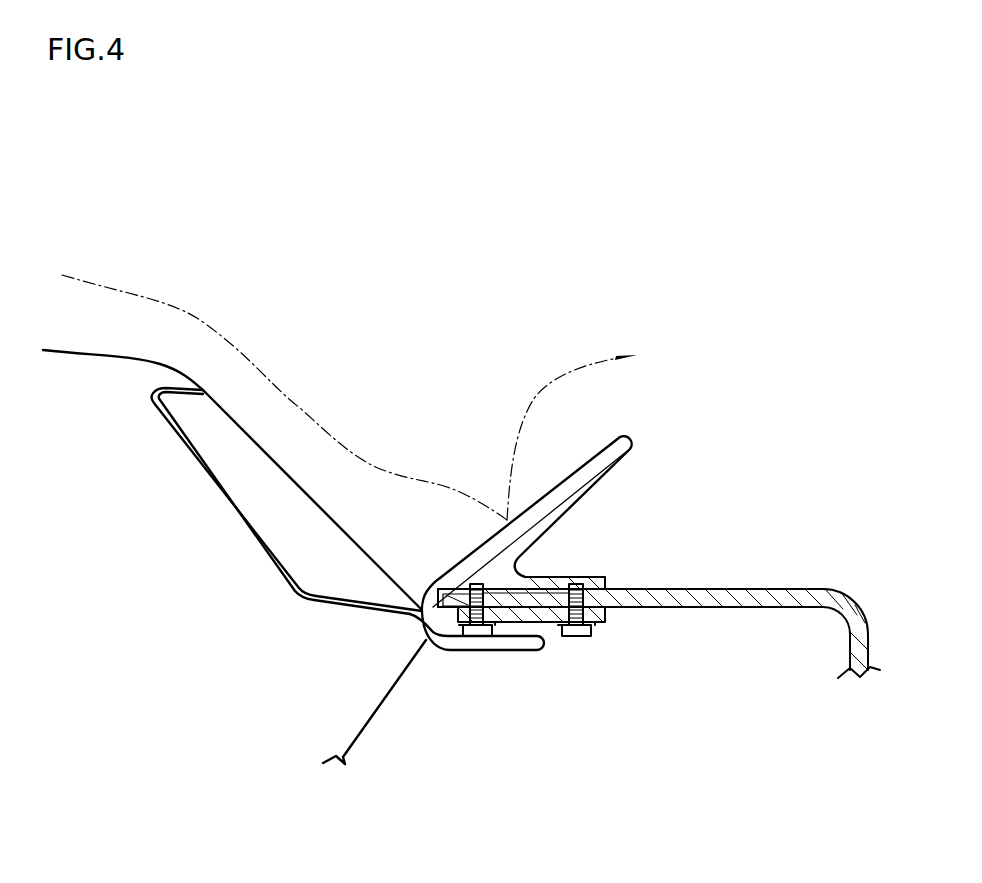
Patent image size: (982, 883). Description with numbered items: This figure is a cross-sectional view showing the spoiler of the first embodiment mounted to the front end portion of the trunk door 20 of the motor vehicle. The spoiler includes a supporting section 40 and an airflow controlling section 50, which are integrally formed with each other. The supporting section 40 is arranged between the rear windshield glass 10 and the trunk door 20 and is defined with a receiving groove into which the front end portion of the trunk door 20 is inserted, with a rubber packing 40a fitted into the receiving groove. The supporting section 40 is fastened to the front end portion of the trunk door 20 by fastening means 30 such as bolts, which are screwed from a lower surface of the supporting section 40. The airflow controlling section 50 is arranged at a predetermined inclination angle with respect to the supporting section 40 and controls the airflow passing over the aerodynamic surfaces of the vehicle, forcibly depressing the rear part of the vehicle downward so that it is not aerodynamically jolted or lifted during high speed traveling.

The rear windshield glass 10 is at (213, 420).
The trunk door 20 is at (710, 607).
The fastening means 30 is at (573, 637).
The supporting section 40 is at (447, 617).
The rubber packing 40a is at (607, 590).
The airflow controlling section 50 is at (632, 440).